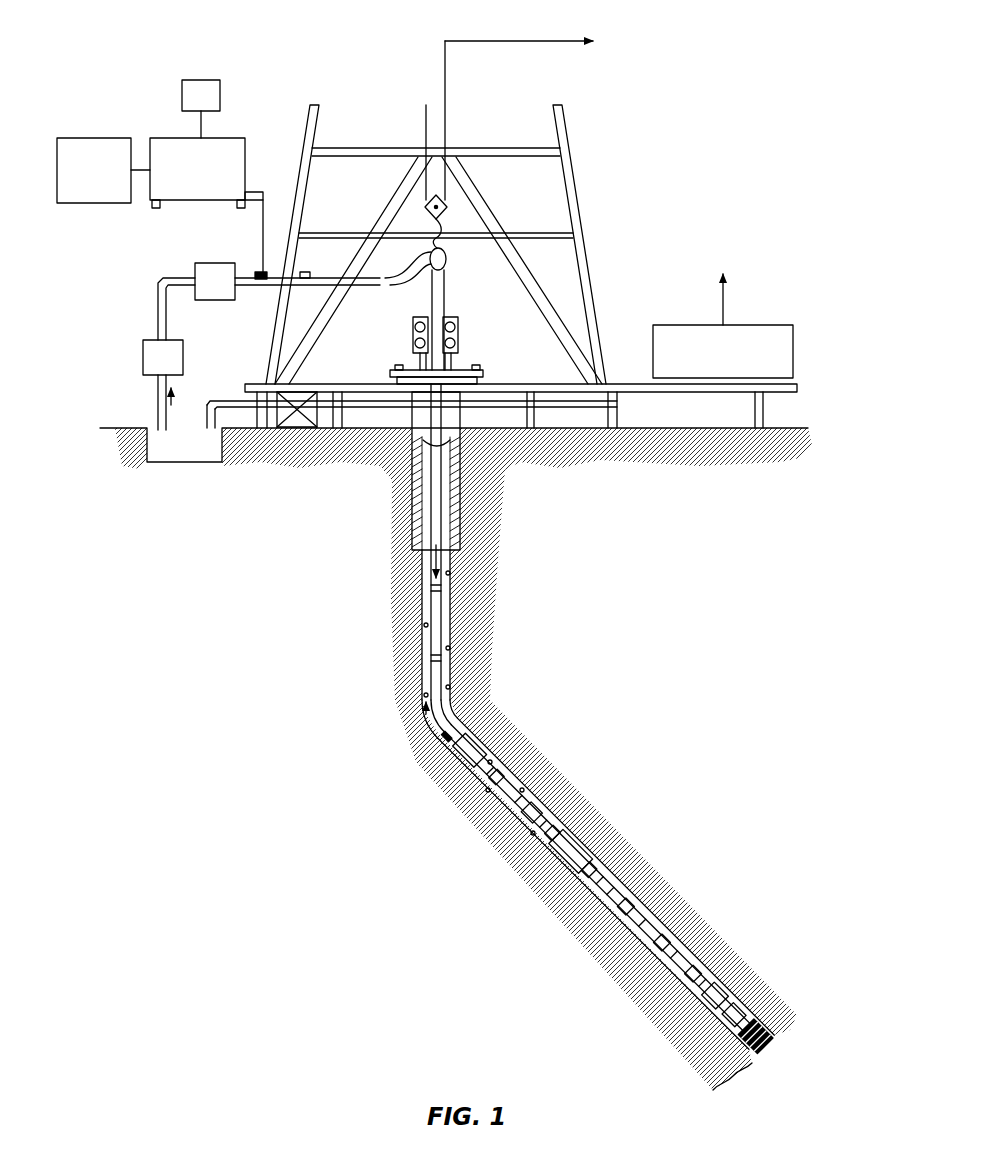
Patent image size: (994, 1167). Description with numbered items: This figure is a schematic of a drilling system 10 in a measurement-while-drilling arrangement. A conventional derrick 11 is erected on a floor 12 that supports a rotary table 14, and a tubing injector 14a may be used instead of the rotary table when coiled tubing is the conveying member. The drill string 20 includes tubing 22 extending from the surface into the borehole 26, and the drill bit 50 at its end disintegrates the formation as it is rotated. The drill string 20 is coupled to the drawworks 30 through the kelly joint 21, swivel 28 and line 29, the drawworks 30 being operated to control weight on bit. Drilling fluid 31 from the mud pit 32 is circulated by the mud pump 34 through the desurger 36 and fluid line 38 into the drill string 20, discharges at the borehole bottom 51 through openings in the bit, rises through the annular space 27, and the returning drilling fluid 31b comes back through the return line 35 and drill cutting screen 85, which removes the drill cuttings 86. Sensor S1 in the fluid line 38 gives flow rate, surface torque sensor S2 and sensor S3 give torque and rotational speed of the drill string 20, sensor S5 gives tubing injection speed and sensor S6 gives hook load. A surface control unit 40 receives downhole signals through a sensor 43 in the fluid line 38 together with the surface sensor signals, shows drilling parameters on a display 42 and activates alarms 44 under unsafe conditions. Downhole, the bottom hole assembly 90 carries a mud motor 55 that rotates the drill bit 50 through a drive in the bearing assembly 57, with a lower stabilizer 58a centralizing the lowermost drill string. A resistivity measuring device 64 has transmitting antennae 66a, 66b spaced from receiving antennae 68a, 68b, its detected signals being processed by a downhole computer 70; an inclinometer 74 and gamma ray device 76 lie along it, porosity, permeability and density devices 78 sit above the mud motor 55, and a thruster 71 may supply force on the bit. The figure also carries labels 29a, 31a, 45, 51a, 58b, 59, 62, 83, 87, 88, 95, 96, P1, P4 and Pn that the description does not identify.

The drilling system 10 is at (376, 56).
The derrick 11 is at (450, 244).
The floor 12 is at (521, 377).
The rotary table 14 is at (455, 361).
The tubing injector 14a is at (466, 343).
The drill string 20 is at (452, 636).
The kelly joint 21 is at (468, 320).
The tubing 22 is at (550, 707).
The borehole 26 is at (598, 802).
The annular space 27 is at (505, 732).
The swivel 28 is at (409, 284).
The line 29 is at (557, 117).
The downhole sensor sub 29a is at (617, 835).
The drawworks 30 is at (740, 326).
The drilling fluid 31 is at (454, 460).
The mud flow into drill string 31a is at (388, 558).
The returning drilling fluid 31b is at (378, 700).
The mud pit 32 is at (187, 446).
The mud pump 34 is at (139, 334).
The return line 35 is at (412, 455).
The desurger 36 is at (189, 259).
The fluid line 38 is at (269, 354).
The surface control unit 40 is at (190, 148).
The display/monitor 42 is at (218, 87).
The sensor 43 is at (273, 248).
The alarms 44 is at (94, 185).
The signal line 45 is at (274, 191).
The drill bit 50 is at (768, 1027).
The borehole bottom 51 is at (721, 1096).
The bit face 51a is at (813, 1043).
The downhole motor 55 is at (548, 775).
The bearing assembly 57 is at (746, 978).
The lower stabilizer 58a is at (763, 989).
The bottom hole assembly sub 58b is at (511, 873).
The bit sub 59 is at (689, 1039).
The stabilizer 62 is at (616, 831).
The resistivity measuring device 64 is at (601, 960).
The transmitting antenna 66a is at (540, 891).
The transmitting antenna 66b is at (599, 986).
The receiving antenna 68a is at (570, 932).
The receiving antenna 68b is at (673, 886).
The downhole computer 70 is at (427, 765).
The thruster 71 is at (653, 995).
The inclinometer 74 is at (693, 921).
The gamma ray device 76 is at (722, 943).
The formation porosity, permeability and density devices 78 is at (392, 766).
The telemetry sub 83 is at (559, 907).
The drill cutting screen 85 is at (308, 383).
The drill cuttings 86 is at (479, 703).
The casing 87 is at (475, 471).
The formation fluid flow direction 88 is at (731, 985).
The bottom hole assembly 90 is at (648, 792).
The formation 95 is at (486, 759).
The formation fluid 96 is at (646, 1058).
The flow rate sensor S1 is at (334, 240).
The surface torque sensor S2 is at (514, 365).
The rotational speed sensor S3 is at (379, 358).
The tubing injection speed sensor S5 is at (461, 265).
The hook load sensor S6 is at (411, 241).
The pressure P1 is at (773, 1001).
The pressure P4 is at (554, 742).
The pressure Pn is at (394, 578).